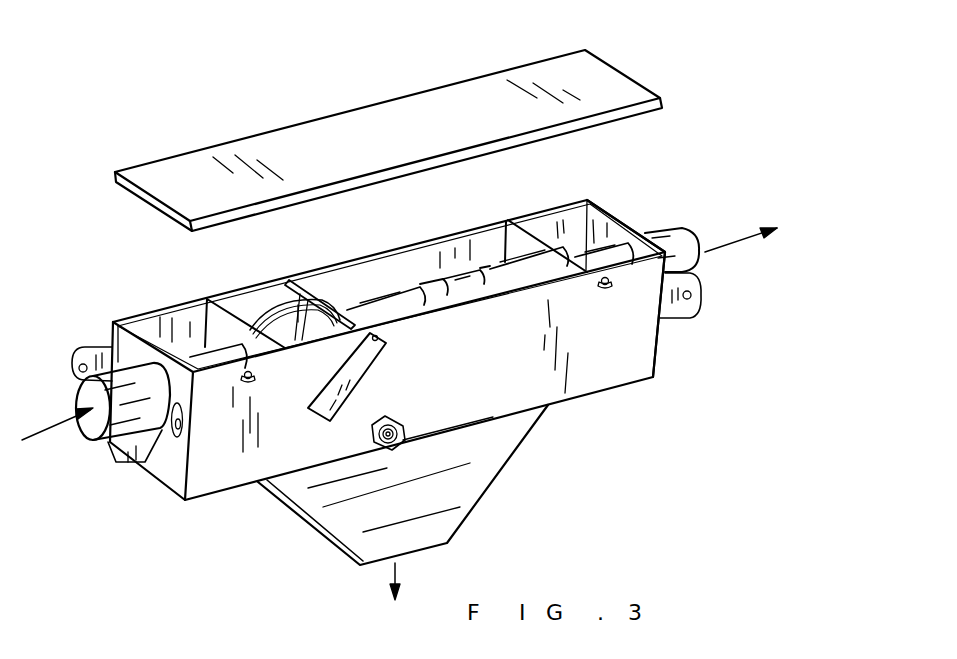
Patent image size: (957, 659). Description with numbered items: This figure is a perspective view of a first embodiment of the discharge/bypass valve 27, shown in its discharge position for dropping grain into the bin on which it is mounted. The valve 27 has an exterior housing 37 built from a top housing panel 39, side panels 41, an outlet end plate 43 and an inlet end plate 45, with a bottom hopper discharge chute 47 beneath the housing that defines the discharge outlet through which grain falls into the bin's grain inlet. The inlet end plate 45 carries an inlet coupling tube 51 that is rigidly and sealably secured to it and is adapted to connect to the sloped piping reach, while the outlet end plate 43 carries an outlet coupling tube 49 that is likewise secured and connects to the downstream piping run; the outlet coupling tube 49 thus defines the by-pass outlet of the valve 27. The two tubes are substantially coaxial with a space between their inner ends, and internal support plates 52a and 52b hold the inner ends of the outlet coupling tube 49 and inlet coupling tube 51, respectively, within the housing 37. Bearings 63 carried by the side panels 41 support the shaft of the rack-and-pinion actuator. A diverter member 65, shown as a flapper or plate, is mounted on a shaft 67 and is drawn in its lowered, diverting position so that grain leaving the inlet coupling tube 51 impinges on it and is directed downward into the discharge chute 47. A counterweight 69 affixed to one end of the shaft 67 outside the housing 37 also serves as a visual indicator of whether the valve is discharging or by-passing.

The valve 27 is at (684, 134).
The exterior housing 37 is at (590, 393).
The top housing panel 39 is at (602, 90).
The side panels 41 is at (425, 238).
The outlet end plate 43 is at (604, 208).
The inlet end plate 45 is at (152, 456).
The bottom hopper discharge chute 47 is at (477, 503).
The outlet coupling tube 49 is at (676, 233).
The inlet coupling tube 51 is at (133, 390).
The internal support plate 52a is at (527, 250).
The internal support plate 52b is at (227, 328).
The bearings 63 is at (380, 452).
The diverter member 65 is at (323, 327).
The shaft 67 is at (337, 312).
The counterweight 69 is at (327, 418).